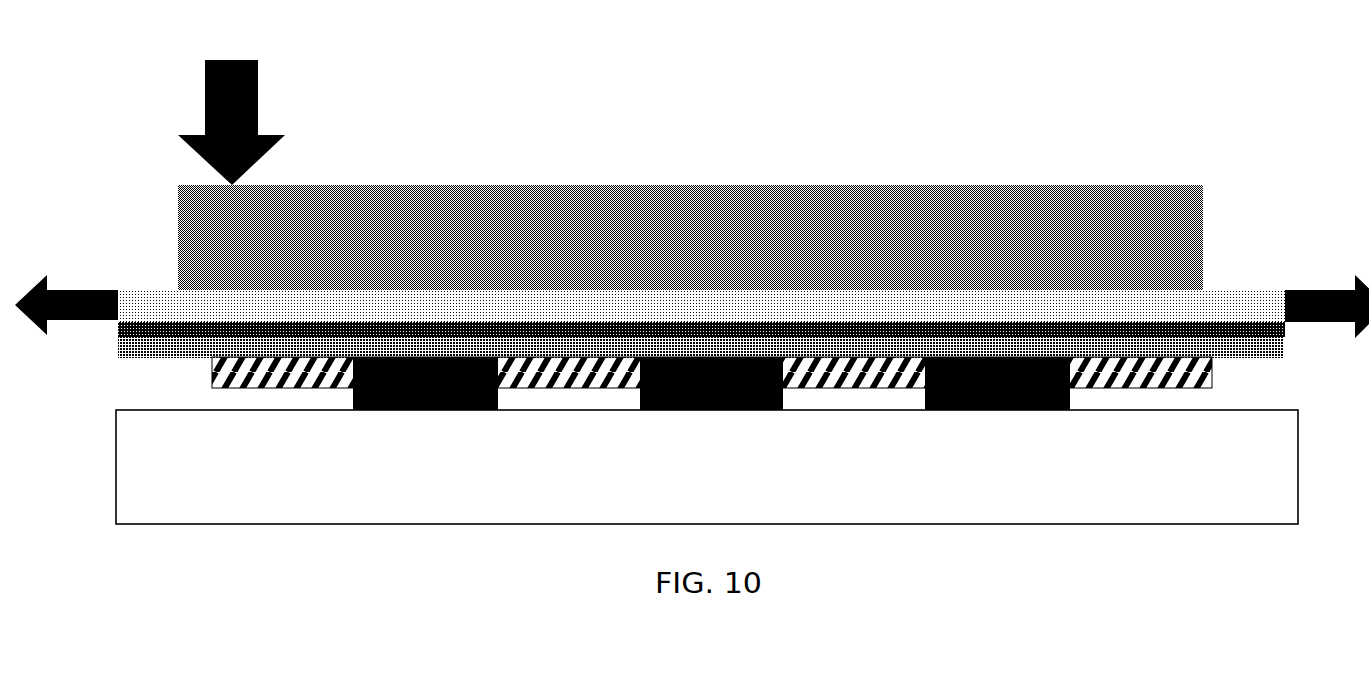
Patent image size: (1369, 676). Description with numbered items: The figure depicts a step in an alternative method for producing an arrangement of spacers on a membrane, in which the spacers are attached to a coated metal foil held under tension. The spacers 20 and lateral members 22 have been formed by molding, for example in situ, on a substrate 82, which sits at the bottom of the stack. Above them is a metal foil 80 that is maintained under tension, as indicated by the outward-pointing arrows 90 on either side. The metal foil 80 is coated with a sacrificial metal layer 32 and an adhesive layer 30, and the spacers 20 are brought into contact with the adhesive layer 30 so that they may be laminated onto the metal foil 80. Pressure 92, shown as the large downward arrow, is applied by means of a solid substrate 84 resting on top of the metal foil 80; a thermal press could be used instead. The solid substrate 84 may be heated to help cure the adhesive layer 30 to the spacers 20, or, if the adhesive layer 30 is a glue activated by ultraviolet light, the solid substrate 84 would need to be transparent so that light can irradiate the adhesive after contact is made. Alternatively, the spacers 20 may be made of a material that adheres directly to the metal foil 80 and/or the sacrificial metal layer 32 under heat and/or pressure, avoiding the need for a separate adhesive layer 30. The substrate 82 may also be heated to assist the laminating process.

The spacers 20 is at (413, 393).
The lateral members 22 is at (1203, 372).
The adhesive layer 30 is at (1283, 352).
The sacrificial metal layer 32 is at (118, 337).
The metal foil 80 is at (740, 322).
The substrate 82 is at (780, 482).
The solid substrate 84 is at (795, 252).
The arrows 90 is at (78, 290).
The pressure 92 is at (205, 82).